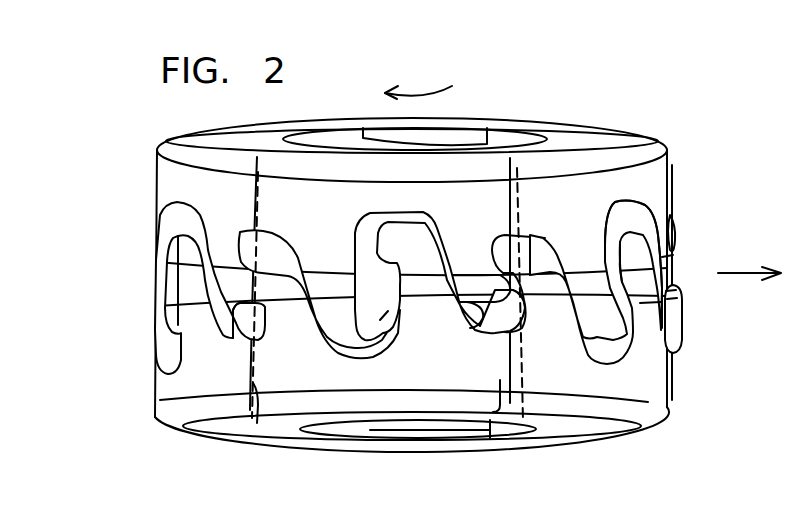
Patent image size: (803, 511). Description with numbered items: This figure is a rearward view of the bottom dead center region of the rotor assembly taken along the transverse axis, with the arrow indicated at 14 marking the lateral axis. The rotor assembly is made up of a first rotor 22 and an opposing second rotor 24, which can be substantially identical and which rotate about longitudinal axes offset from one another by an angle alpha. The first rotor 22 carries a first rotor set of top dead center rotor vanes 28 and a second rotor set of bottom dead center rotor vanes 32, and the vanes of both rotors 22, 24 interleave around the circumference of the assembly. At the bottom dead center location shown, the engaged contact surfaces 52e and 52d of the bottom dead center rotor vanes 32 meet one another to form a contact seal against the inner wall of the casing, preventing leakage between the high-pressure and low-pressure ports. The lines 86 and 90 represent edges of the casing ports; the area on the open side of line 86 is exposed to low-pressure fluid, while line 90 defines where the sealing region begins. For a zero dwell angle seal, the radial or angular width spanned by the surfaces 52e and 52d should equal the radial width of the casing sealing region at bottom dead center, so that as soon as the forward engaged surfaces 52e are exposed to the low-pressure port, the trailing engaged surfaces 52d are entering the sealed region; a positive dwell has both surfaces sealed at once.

The lateral axis 14 is at (740, 275).
The first rotor 22 is at (653, 374).
The second rotor 24 is at (590, 135).
The top dead center rotor vanes 28 is at (340, 261).
The bottom dead center rotor vanes 32 is at (273, 307).
The contact surface 52d is at (485, 273).
The contact surface 52e is at (208, 226).
The line 86 is at (253, 383).
The line 90 is at (523, 392).